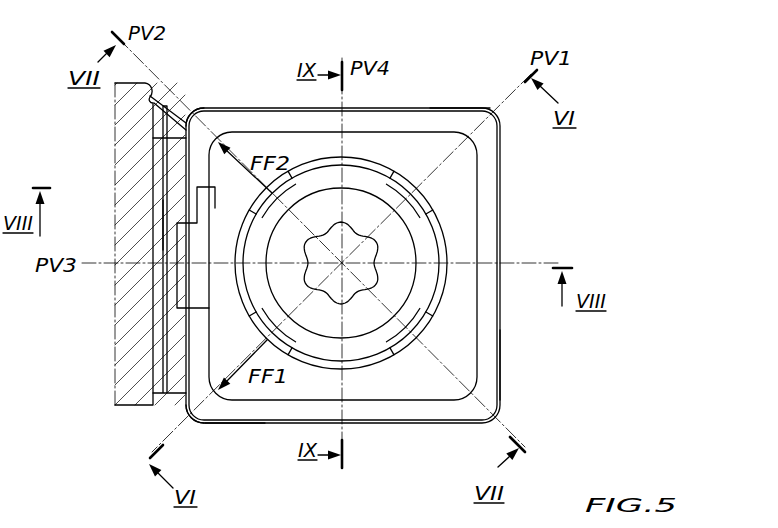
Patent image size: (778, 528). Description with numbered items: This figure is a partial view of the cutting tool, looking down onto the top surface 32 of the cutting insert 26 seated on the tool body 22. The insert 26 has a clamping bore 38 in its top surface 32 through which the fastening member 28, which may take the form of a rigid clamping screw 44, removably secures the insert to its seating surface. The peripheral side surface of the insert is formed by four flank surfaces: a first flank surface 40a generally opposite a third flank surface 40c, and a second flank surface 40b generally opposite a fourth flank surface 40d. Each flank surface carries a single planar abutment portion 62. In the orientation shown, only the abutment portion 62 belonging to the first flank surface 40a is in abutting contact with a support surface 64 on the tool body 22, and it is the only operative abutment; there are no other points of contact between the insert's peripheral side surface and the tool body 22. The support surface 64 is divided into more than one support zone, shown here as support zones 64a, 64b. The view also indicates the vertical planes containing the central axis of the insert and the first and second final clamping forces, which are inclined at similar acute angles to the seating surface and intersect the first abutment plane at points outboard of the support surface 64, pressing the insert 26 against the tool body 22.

The tool body 22 is at (128, 157).
The cutting insert 26 is at (285, 136).
The fastening member 28 is at (362, 342).
The top surface 32 is at (385, 138).
The clamping bore 38 is at (445, 240).
The first flank surface 40a is at (208, 333).
The second flank surface 40b is at (460, 108).
The third flank surface 40c is at (500, 362).
The fourth flank surface 40d is at (232, 423).
The rigid clamping screw 44 is at (385, 328).
The single planar abutment portion 62 is at (185, 203).
The support surface 64 is at (183, 345).
The support zone 64a is at (222, 86).
The support zone 64b is at (163, 382).